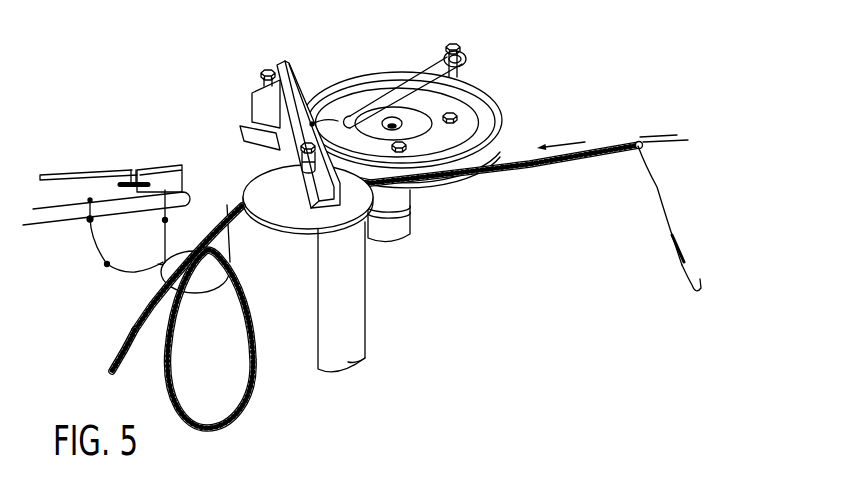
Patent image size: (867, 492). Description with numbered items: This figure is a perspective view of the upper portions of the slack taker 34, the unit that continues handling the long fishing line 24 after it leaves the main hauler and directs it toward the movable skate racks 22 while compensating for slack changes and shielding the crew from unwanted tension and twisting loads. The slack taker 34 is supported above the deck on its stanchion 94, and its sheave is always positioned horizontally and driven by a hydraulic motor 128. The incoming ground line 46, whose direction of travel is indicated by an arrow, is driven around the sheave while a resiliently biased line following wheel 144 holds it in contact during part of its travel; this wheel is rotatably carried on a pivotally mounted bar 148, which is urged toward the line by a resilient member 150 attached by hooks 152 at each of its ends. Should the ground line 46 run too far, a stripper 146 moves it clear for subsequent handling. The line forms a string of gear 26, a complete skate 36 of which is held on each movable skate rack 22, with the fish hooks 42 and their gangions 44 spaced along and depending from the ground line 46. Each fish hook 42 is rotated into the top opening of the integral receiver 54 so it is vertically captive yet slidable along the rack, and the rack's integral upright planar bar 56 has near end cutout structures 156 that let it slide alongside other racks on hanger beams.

The movable skate rack 22 is at (166, 160).
The fishing line 24 is at (256, 399).
The string of gear 26 is at (600, 138).
The slack taker 34 is at (375, 70).
The skate 36 is at (262, 349).
The fish hook 42 is at (88, 222).
The gangion 44 is at (130, 273).
The ground line 46 is at (117, 360).
The receiver 54 is at (64, 224).
The upright full length planar bar 56 is at (184, 173).
The stanchion 94 is at (366, 324).
The hydraulic motor 128 is at (392, 247).
The resiliently biased line following wheel 144 is at (289, 233).
The stripper 146 is at (243, 124).
The pivotally mounted bar 148 is at (292, 76).
The resilient member 150 is at (388, 92).
The hook 152 is at (466, 54).
The near end cutout structure 156 is at (132, 169).